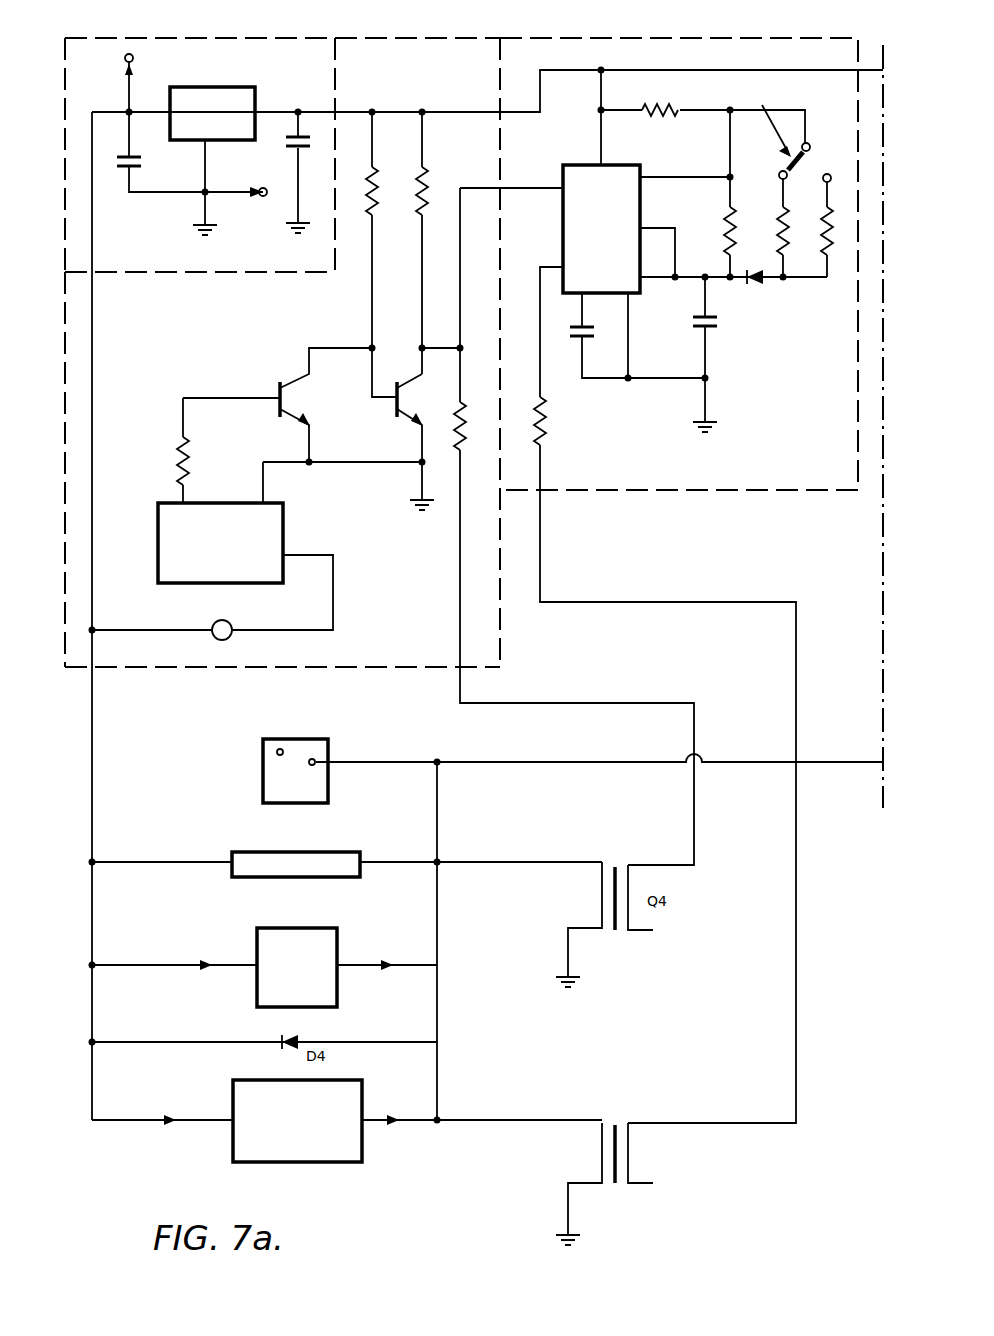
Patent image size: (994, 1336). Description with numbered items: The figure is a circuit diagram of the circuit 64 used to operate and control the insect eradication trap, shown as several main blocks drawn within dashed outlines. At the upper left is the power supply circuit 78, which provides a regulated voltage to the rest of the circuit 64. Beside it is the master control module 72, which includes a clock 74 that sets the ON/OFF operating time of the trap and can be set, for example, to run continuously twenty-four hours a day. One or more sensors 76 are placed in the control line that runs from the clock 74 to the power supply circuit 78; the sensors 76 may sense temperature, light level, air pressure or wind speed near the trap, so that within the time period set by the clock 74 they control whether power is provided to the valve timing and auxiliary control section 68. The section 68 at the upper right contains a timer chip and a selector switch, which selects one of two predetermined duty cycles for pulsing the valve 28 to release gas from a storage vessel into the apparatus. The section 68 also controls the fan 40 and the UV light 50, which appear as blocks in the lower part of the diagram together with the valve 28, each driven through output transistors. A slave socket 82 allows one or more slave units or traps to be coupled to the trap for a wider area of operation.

The power supply circuit 78 is at (178, 37).
The master control module 72 is at (421, 37).
The valve timing and auxiliary control section 68 is at (757, 35).
The clock 74 is at (224, 565).
The sensors 76 is at (222, 640).
The slave socket 82 is at (278, 769).
The UV light 50 is at (240, 853).
The fan 40 is at (310, 992).
The valve 28 is at (314, 1142).
The circuit 64 is at (545, 1157).